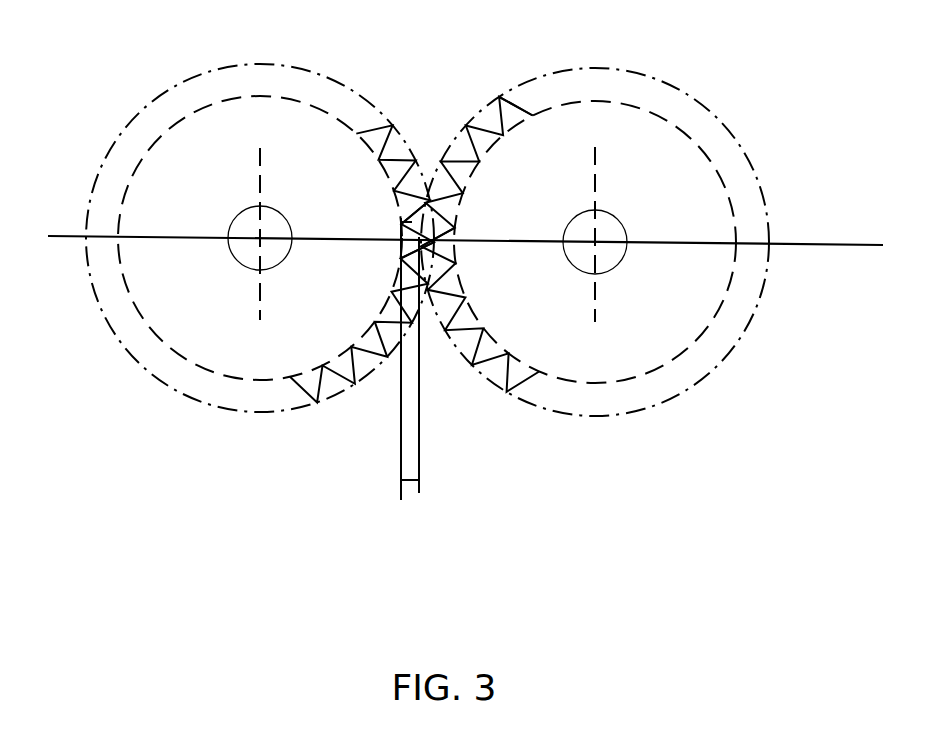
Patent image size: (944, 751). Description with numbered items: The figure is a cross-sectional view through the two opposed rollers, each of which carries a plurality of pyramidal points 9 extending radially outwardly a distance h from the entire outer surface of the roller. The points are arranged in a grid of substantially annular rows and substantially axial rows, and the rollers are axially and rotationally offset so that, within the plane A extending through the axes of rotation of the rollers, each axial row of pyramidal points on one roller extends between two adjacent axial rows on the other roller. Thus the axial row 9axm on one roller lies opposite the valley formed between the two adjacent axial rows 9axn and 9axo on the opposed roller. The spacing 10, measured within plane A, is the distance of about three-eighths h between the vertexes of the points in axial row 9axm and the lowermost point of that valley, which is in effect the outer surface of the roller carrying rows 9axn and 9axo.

The pyramidal points 9 is at (490, 107).
The radial extent of pyramidal points h is at (510, 94).
The axial row of pyramidal points 9axn is at (400, 223).
The axial row of pyramidal points 9axm is at (452, 236).
The axial row of pyramidal points 9axo is at (405, 258).
The three-eighths h spacing 10 is at (405, 483).
The plane through axes of rotation A is at (456, 243).